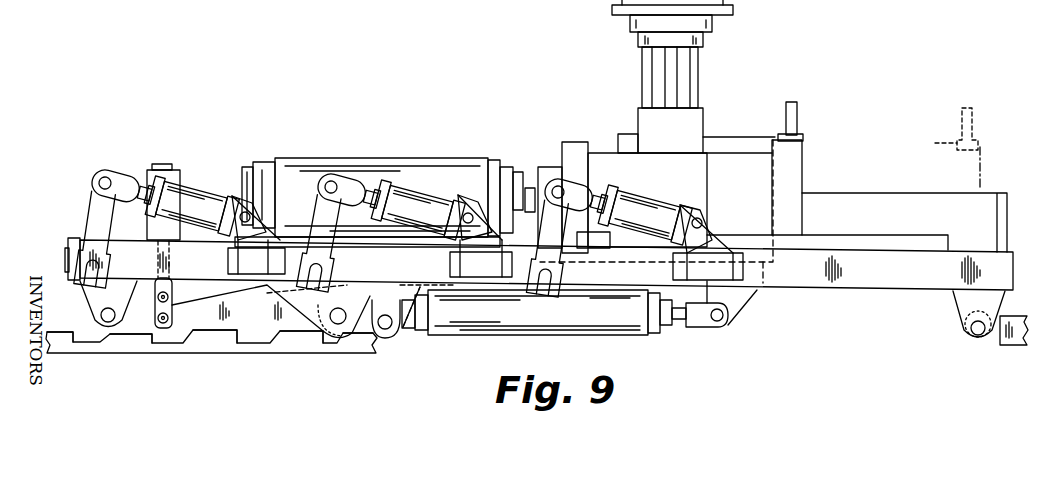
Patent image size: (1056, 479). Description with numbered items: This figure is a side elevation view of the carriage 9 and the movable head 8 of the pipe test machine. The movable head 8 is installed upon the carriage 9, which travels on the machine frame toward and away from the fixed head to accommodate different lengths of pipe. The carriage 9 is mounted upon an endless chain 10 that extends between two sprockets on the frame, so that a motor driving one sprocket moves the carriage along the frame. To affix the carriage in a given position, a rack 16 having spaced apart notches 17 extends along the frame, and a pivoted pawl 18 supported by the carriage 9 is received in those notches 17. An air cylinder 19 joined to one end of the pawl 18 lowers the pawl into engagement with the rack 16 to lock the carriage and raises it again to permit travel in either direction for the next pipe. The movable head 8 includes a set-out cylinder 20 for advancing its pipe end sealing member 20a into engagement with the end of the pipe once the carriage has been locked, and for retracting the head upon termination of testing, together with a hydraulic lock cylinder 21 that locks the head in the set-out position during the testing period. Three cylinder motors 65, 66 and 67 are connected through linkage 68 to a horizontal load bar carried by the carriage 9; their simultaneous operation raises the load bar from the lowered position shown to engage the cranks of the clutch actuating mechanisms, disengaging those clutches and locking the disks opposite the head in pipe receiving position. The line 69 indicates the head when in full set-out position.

The movable head 8 is at (557, 147).
The carriage 9 is at (888, 282).
The endless chain 10 is at (973, 340).
The rack 16 is at (292, 346).
The notches 17 is at (76, 340).
The pawl 18 is at (211, 305).
The air cylinder 19 is at (165, 168).
The set-out cylinder 20 is at (492, 335).
The pipe end sealing member 20a is at (803, 150).
The hydraulic lock cylinder 21 is at (483, 163).
The cylinder motor 65 is at (630, 183).
The cylinder motor 66 is at (417, 187).
The cylinder motor 67 is at (203, 180).
The linkage 68 is at (98, 216).
The line 69 is at (985, 167).